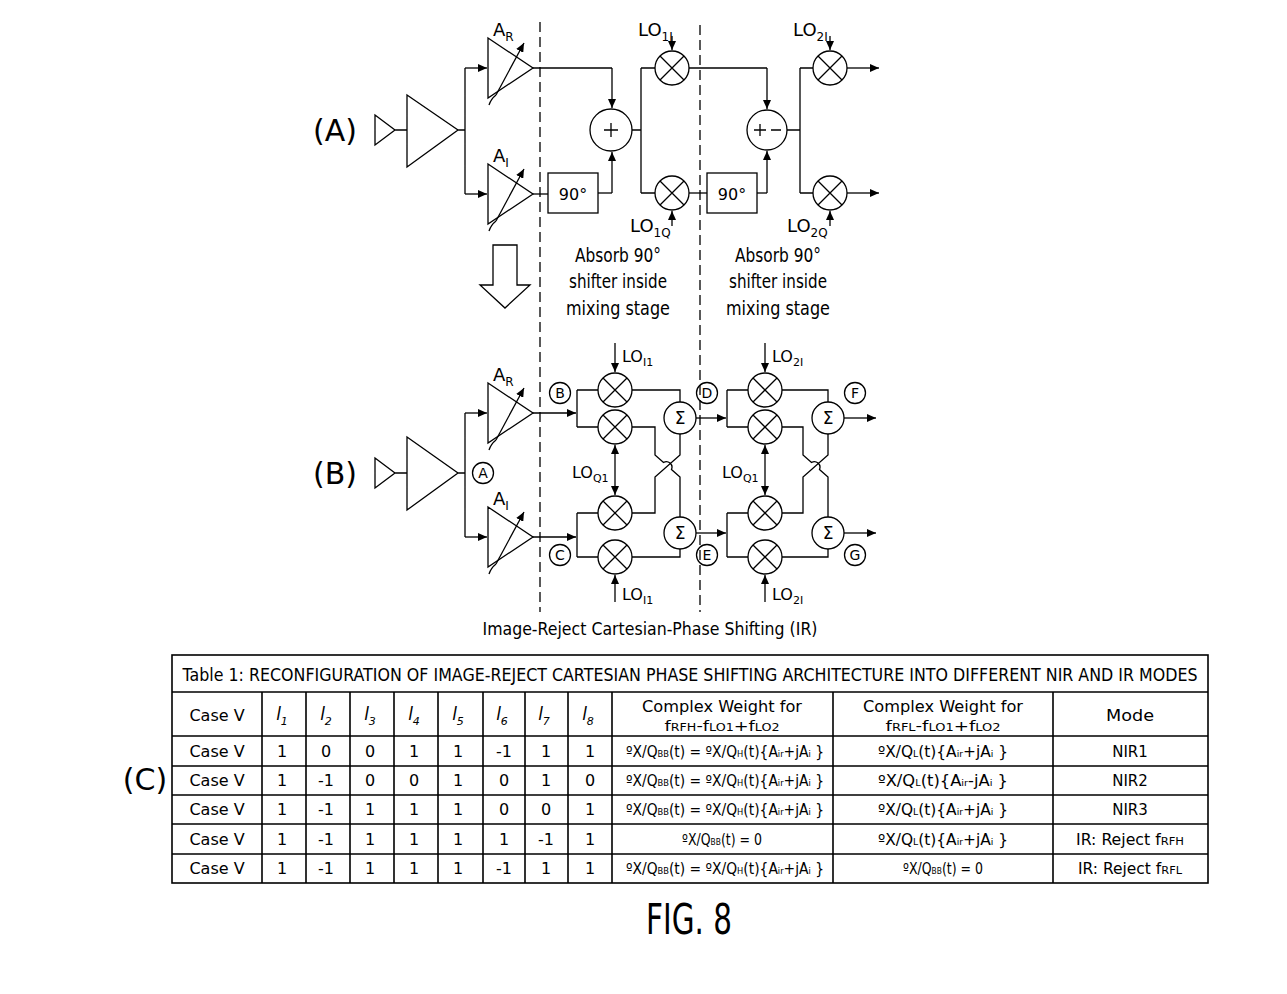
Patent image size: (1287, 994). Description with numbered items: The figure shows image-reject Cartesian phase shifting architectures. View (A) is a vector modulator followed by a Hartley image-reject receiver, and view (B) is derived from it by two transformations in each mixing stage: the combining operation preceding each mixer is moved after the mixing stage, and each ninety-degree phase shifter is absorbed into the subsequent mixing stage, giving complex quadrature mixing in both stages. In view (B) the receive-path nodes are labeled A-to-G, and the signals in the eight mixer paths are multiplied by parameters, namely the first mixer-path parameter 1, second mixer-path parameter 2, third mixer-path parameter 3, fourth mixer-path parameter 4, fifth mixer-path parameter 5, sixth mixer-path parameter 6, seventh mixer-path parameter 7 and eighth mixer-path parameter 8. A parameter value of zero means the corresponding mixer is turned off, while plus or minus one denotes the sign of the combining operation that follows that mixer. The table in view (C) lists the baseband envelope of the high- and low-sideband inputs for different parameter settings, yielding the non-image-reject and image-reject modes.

The mixer-path parameter l1 1 is at (656, 384).
The mixer-path parameter l2 2 is at (667, 473).
The mixer-path parameter l3 3 is at (667, 476).
The mixer-path parameter l4 4 is at (656, 576).
The mixer-path parameter l5 5 is at (805, 384).
The mixer-path parameter l6 6 is at (815, 473).
The mixer-path parameter l7 7 is at (815, 476).
The mixer-path parameter l8 8 is at (805, 576).